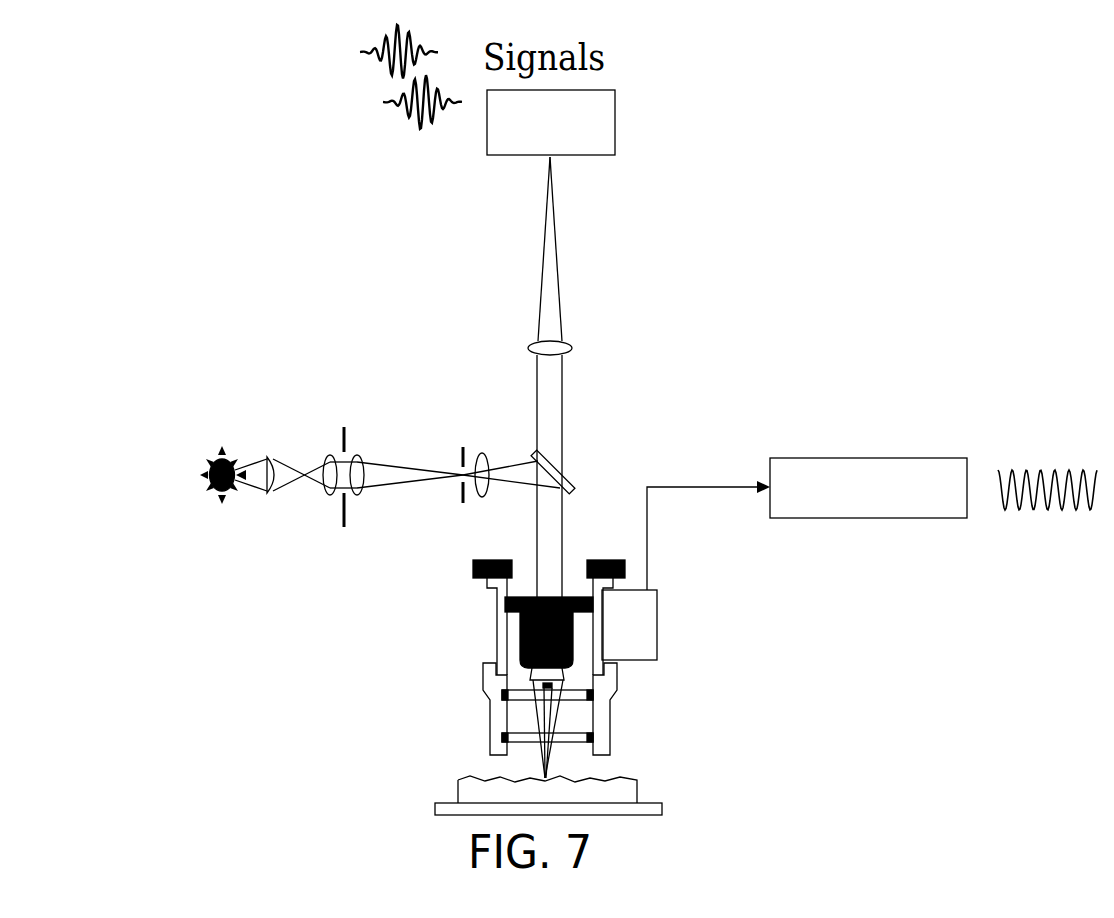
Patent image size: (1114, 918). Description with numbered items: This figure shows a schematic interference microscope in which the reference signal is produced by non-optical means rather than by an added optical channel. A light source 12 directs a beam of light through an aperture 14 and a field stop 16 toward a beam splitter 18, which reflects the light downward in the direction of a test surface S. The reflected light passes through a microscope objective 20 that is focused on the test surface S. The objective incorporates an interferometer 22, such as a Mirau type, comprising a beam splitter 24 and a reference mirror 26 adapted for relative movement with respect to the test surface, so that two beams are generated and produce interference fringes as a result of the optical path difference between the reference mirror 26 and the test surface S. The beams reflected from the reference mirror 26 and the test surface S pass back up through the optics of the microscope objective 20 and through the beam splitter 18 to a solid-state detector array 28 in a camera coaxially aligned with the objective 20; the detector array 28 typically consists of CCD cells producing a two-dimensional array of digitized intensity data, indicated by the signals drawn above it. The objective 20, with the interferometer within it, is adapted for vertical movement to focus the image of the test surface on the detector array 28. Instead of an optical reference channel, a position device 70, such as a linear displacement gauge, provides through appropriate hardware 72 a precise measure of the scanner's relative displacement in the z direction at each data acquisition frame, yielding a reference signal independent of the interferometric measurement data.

The light source 12 is at (220, 451).
The aperture 14 is at (343, 440).
The field stop 16 is at (462, 447).
The beam splitter 18 is at (567, 480).
The microscope objective 20 is at (522, 628).
The interferometer 22 is at (613, 678).
The beam splitter 24 is at (580, 735).
The reference mirror 26 is at (520, 700).
The solid-state detector array 28 is at (617, 120).
The position device 70 is at (655, 610).
The hardware 72 is at (877, 458).
The test surface S is at (620, 782).